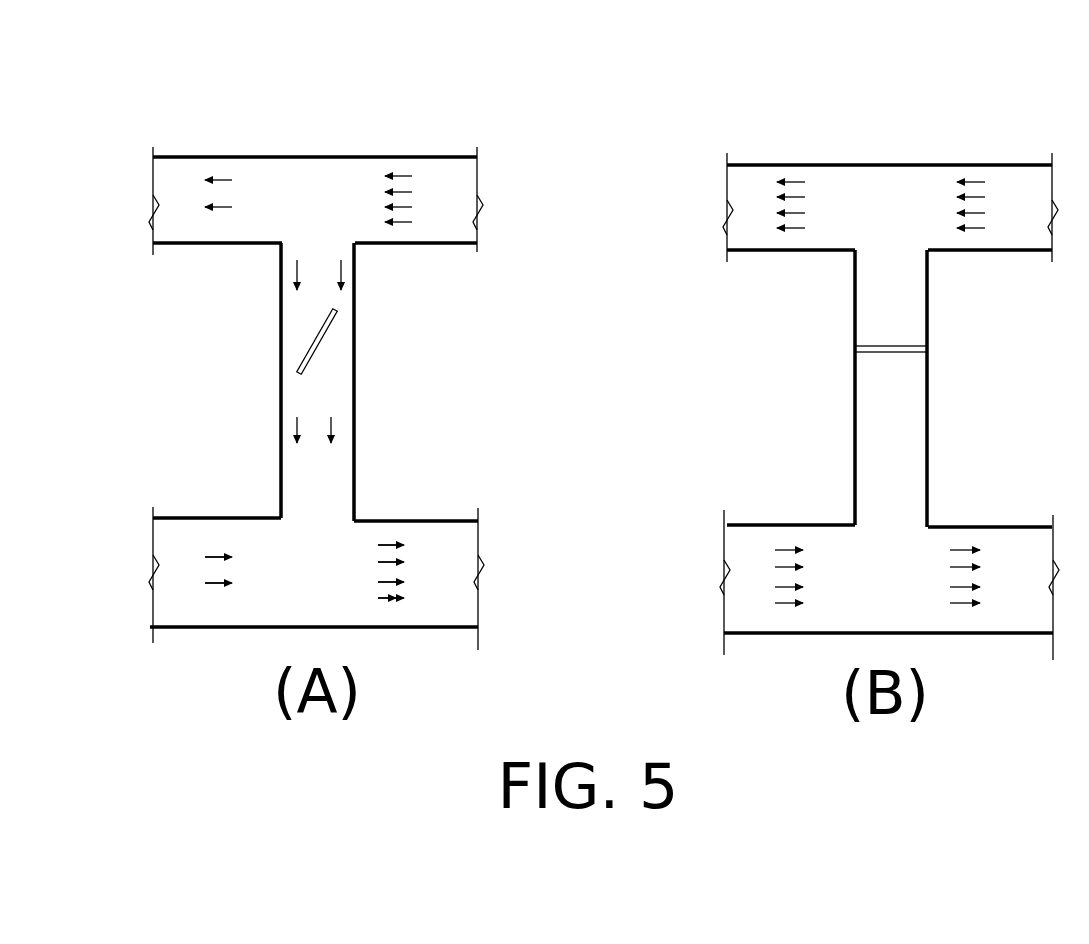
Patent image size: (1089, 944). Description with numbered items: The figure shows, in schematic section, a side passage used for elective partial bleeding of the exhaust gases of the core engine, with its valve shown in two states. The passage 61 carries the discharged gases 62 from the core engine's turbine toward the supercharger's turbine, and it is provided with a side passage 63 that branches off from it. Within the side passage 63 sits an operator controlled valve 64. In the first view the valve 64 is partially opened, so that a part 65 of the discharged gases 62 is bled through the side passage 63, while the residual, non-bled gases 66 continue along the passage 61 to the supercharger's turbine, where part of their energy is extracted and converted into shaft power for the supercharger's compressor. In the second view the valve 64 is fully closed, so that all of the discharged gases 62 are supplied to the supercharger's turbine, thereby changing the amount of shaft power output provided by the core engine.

In FIG. 5A, the passage 61 is at (305, 158).
In FIG. 5B, the passage 61 is at (877, 165).
In FIG. 5A, the discharged gases 62 is at (398, 175).
In FIG. 5B, the discharged gases 62 is at (797, 183).
In FIG. 5A, the side passage 63 is at (357, 385).
In FIG. 5B, the side passage 63 is at (930, 452).
In FIG. 5A, the operator controlled valve 64 is at (310, 357).
In FIG. 5B, the operator controlled valve 64 is at (900, 352).
In FIG. 5A, the bled part of discharged gases 65 is at (335, 430).
In FIG. 5A, the residual gases 66 is at (220, 180).